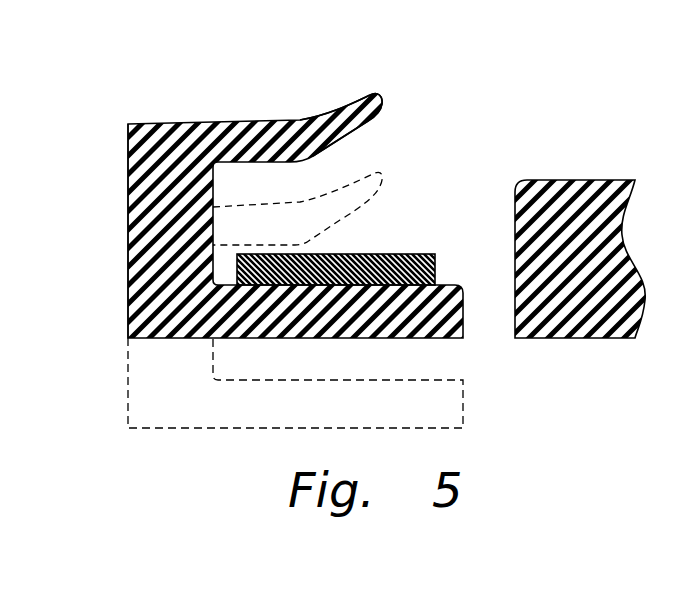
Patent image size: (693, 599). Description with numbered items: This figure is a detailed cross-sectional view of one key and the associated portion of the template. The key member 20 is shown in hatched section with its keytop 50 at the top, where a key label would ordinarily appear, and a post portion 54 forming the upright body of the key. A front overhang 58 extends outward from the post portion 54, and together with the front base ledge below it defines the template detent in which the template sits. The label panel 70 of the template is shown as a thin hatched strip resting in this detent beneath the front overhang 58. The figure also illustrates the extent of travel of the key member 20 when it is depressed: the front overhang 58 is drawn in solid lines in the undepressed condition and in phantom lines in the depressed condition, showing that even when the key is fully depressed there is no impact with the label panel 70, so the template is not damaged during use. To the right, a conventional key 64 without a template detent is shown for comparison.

The key member 20 is at (243, 90).
The keytop 50 is at (139, 131).
The post portion 54 is at (137, 216).
The front overhang 58 is at (392, 101).
The conventional key 64 is at (567, 200).
The label panel 70 is at (433, 254).